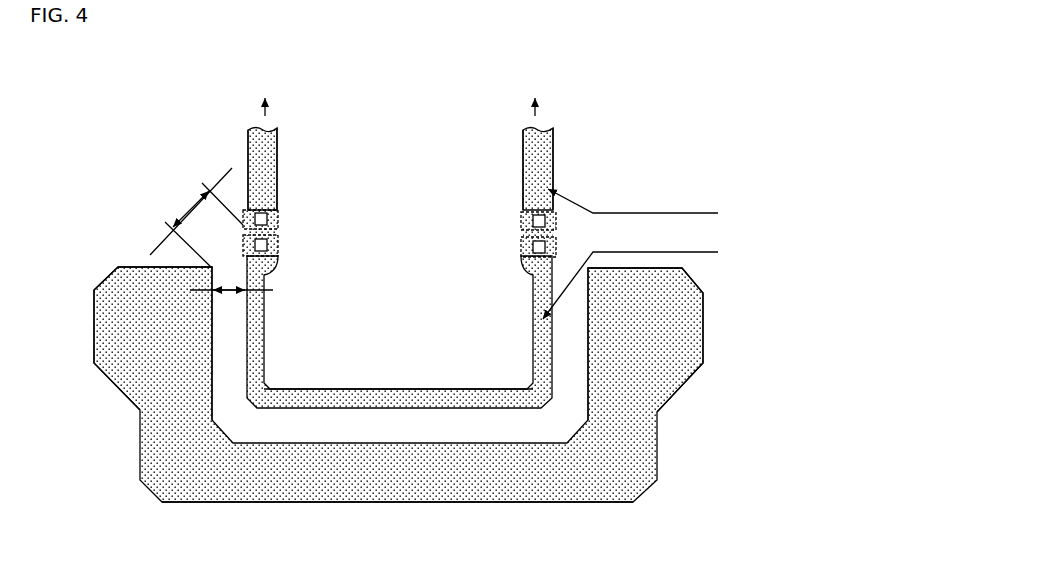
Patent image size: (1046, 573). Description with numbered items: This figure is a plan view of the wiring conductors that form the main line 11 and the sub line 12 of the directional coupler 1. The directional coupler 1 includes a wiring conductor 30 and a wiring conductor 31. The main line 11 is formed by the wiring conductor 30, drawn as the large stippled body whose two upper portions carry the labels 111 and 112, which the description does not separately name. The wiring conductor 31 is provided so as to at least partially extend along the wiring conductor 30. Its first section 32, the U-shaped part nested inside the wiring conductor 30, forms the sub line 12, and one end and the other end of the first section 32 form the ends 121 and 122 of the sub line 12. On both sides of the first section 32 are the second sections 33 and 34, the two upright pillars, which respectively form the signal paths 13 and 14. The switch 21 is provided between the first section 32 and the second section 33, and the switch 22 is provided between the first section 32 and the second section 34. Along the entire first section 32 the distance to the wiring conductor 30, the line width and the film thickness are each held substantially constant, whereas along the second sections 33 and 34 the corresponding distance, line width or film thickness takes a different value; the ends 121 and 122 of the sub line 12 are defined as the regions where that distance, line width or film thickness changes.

The directional coupler 1 is at (664, 79).
The main line 11 is at (460, 484).
The sub line 12 is at (412, 395).
The signal path 13 is at (542, 150).
The signal path 14 is at (262, 150).
The switch 21 is at (524, 231).
The switch 22 is at (270, 231).
The wiring conductor 30 is at (373, 480).
The wiring conductor 31 is at (458, 135).
The first section 32 is at (375, 393).
The second section 33 is at (533, 175).
The second section 34 is at (268, 173).
The first protruding portion 111 is at (102, 303).
The second protruding portion 112 is at (693, 308).
The end of sub line 121 is at (521, 246).
The end of sub line 122 is at (277, 246).